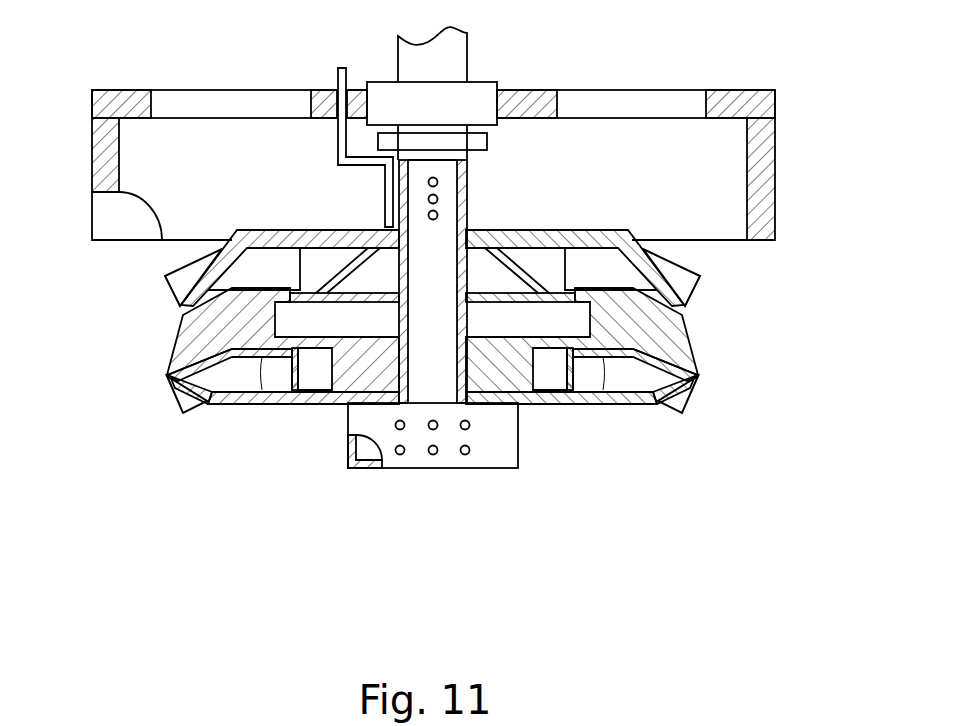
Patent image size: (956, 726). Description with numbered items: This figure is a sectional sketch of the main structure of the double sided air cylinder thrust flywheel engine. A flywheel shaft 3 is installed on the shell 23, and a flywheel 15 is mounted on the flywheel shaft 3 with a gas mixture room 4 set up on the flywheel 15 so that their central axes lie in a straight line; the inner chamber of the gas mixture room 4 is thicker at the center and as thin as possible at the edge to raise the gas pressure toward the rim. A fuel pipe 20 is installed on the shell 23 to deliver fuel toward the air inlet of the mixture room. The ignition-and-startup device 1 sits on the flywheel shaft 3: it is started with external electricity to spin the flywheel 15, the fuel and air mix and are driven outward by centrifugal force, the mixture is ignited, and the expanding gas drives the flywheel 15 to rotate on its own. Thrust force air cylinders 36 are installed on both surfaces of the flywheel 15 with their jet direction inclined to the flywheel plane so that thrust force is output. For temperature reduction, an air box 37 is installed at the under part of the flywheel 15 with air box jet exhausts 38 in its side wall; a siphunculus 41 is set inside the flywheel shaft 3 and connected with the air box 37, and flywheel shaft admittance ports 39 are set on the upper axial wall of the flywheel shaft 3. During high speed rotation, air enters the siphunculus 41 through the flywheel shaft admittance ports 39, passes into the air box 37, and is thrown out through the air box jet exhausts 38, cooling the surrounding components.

The ignition-and-startup device 1 is at (487, 134).
The flywheel shaft 3 is at (450, 70).
The gas mixture room 4 is at (482, 283).
The flywheel 15 is at (222, 337).
The fuel pipe 20 is at (343, 96).
The shell 23 is at (120, 215).
The thrust force air cylinder 36 is at (193, 276).
The air box 37 is at (348, 470).
The air box jet exhaust 38 is at (432, 453).
The flywheel shaft admittance port 39 is at (437, 182).
The siphunculus 41 is at (420, 203).